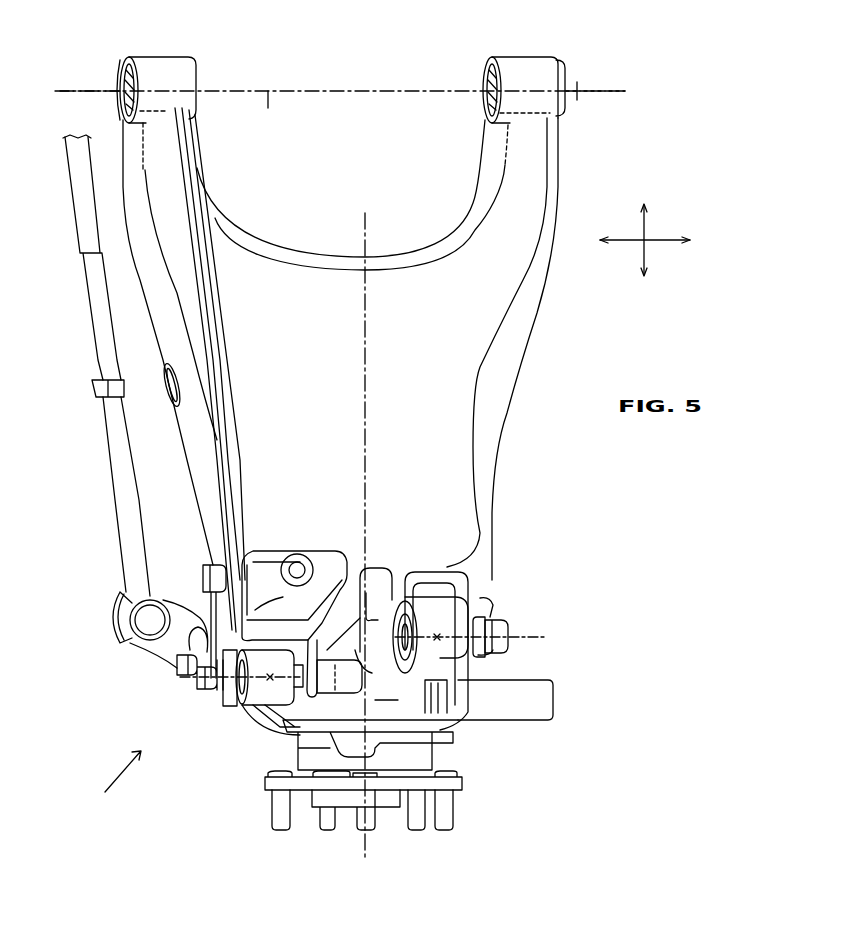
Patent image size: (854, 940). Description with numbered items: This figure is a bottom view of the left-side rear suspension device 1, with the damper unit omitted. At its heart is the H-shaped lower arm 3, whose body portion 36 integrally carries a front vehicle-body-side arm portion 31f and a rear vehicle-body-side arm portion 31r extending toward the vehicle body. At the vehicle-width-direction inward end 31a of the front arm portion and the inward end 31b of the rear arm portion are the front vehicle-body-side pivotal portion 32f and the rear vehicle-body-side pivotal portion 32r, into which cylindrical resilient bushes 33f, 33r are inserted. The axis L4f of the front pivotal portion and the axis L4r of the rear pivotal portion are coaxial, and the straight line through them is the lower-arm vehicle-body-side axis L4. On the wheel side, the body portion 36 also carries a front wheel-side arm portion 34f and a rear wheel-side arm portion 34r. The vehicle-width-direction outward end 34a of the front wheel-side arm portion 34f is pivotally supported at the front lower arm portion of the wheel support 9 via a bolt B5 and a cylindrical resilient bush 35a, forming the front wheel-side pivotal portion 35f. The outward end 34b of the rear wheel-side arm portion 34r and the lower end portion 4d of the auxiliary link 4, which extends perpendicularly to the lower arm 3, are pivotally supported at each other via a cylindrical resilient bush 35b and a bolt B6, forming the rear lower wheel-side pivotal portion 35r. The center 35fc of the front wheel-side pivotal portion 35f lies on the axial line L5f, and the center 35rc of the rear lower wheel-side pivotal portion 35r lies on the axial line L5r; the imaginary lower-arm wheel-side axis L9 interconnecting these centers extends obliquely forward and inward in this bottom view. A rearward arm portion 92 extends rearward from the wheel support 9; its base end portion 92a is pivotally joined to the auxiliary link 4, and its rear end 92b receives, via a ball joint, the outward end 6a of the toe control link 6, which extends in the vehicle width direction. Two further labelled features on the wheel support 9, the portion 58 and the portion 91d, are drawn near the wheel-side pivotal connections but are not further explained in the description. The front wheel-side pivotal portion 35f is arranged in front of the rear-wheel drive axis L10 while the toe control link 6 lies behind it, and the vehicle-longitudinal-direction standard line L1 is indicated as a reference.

The rear suspension device 1 is at (114, 778).
The lower arm 3 is at (349, 320).
The auxiliary link 4 is at (384, 670).
The lower end portion of the auxiliary link 4d is at (258, 718).
The toe control link 6 is at (106, 467).
The outward end of the toe control link 6a is at (128, 613).
The wheel support 9 is at (468, 743).
The vehicle-width-direction inward end of the front vehicle-body-side arm portion 31a is at (544, 66).
The vehicle-width-direction inward end of the rear vehicle-body-side arm portion 31b is at (154, 66).
The front vehicle-body-side arm portion 31f is at (480, 154).
The rear vehicle-body-side arm portion 31r is at (189, 370).
The front vehicle-body-side pivotal portion 32f is at (512, 44).
The rear vehicle-body-side pivotal portion 32r is at (155, 44).
The cylindrical resilient bush 33f is at (567, 80).
The cylindrical resilient bush 33r is at (122, 86).
The vehicle-width-direction outward end of the front wheel-side arm portion 34a is at (508, 650).
The vehicle-width-direction outward end of the rear wheel-side arm portion 34b is at (214, 690).
The front wheel-side arm portion 34f is at (494, 605).
The rear wheel-side arm portion 34r is at (212, 573).
The cylindrical resilient bush 35a is at (402, 585).
The cylindrical resilient bush 35b is at (233, 693).
The front wheel-side pivotal portion 35f is at (465, 635).
The center of the front wheel-side pivotal portion 35fc is at (436, 632).
The rear lower wheel-side pivotal portion 35r is at (253, 708).
The center of the rear lower wheel-side pivotal portion 35rc is at (270, 686).
The body portion of the lower arm 36 is at (185, 442).
The knuckle upper bracket 58 is at (305, 552).
The knuckle front clevis 91d is at (428, 576).
The rearward arm portion 92 is at (136, 630).
The base end portion of the rearward arm portion 92a is at (196, 612).
The rear end of the rearward arm portion 92b is at (111, 635).
The bolt B5 is at (480, 658).
The bolt B6 is at (198, 692).
The vehicle-longitudinal-direction standard line L1 is at (660, 241).
The lower-arm vehicle-body-side axis L4 is at (280, 118).
The axis of the front vehicle-body-side pivotal portion L4f is at (588, 96).
The axis of the rear vehicle-body-side pivotal portion L4r is at (95, 100).
The axial line of the front wheel-side pivotal portion L5f is at (508, 639).
The axial line of the rear lower wheel-side pivotal portion L5r is at (186, 691).
The lower-arm wheel-side axis L9 is at (339, 676).
The rear-wheel drive axis L10 is at (368, 437).